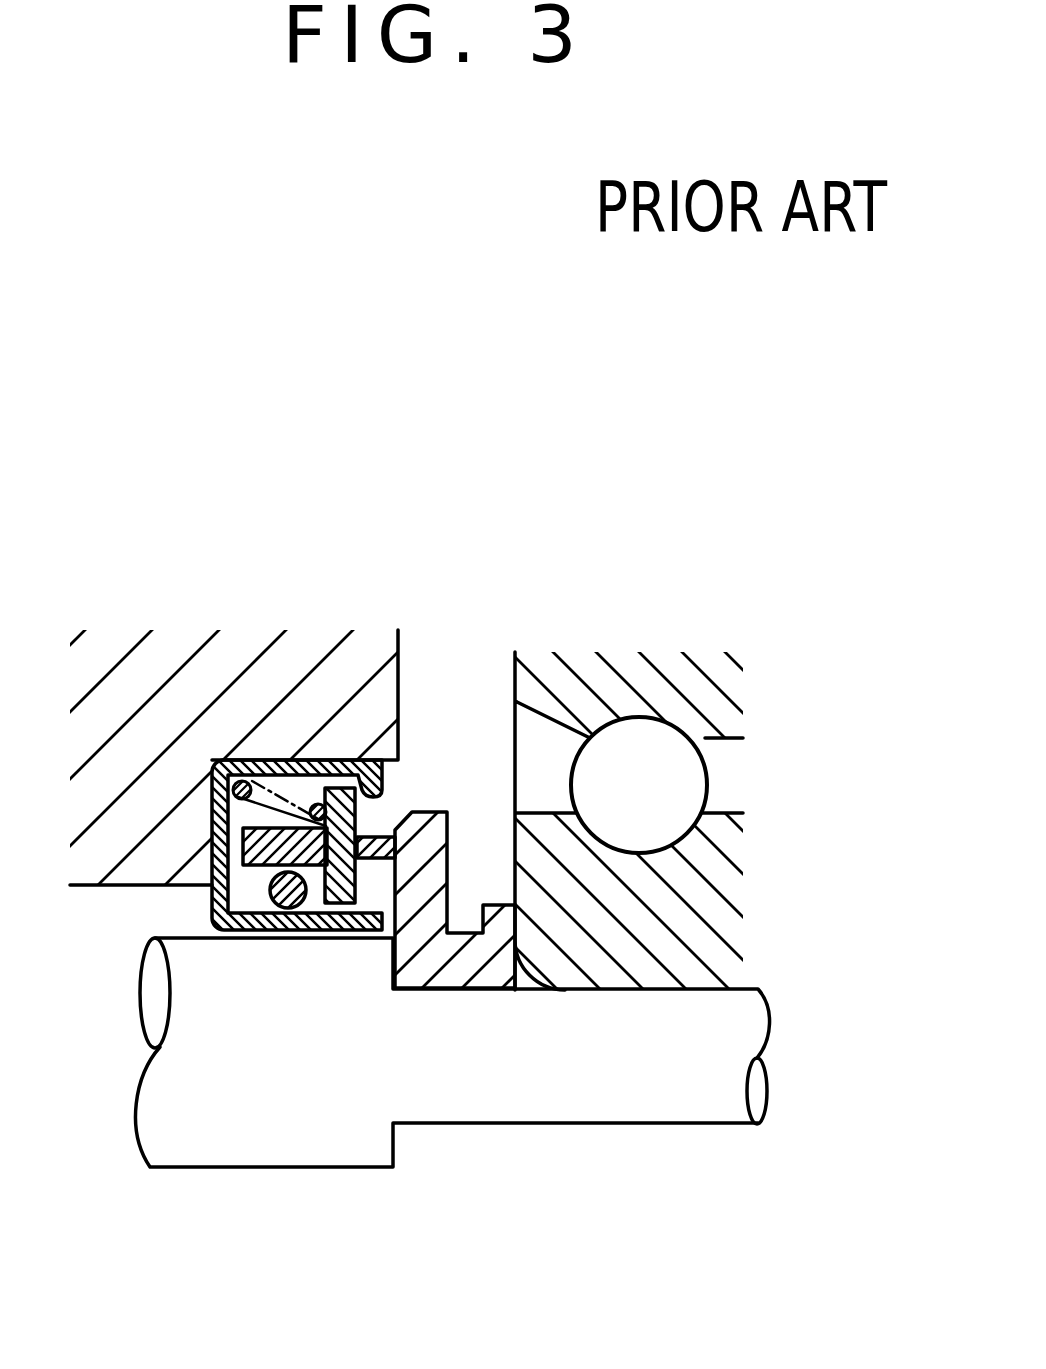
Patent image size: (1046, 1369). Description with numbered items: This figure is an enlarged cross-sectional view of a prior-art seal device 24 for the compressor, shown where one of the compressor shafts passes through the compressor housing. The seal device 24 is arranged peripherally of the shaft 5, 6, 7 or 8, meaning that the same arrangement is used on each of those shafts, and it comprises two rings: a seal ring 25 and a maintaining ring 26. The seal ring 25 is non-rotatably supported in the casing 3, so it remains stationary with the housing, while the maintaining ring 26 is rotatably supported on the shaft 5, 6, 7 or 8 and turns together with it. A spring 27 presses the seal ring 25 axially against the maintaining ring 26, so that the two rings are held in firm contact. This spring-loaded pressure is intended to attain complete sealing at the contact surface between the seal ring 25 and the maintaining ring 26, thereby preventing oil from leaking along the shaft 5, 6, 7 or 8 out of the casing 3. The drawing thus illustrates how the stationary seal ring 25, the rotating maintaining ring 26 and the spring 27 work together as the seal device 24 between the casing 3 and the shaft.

The casing 3 is at (118, 700).
The shaft 5 is at (453, 1110).
The shaft 6 is at (453, 1110).
The shaft 7 is at (453, 1110).
The shaft 8 is at (593, 1077).
The seal device 24 is at (426, 750).
The seal ring 25 is at (340, 877).
The maintaining ring 26 is at (430, 887).
The spring 27 is at (263, 773).